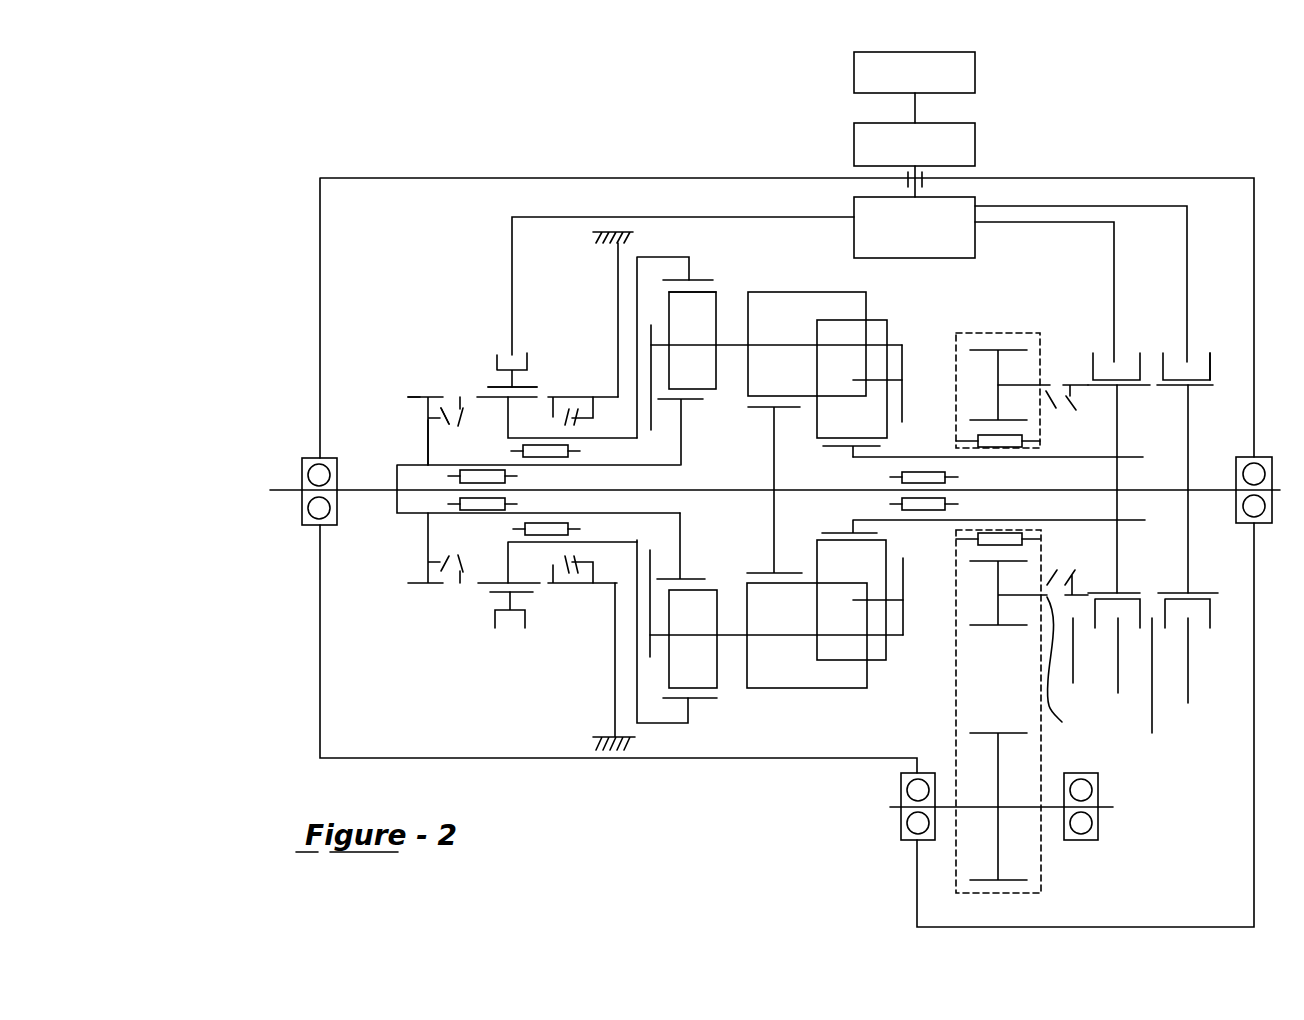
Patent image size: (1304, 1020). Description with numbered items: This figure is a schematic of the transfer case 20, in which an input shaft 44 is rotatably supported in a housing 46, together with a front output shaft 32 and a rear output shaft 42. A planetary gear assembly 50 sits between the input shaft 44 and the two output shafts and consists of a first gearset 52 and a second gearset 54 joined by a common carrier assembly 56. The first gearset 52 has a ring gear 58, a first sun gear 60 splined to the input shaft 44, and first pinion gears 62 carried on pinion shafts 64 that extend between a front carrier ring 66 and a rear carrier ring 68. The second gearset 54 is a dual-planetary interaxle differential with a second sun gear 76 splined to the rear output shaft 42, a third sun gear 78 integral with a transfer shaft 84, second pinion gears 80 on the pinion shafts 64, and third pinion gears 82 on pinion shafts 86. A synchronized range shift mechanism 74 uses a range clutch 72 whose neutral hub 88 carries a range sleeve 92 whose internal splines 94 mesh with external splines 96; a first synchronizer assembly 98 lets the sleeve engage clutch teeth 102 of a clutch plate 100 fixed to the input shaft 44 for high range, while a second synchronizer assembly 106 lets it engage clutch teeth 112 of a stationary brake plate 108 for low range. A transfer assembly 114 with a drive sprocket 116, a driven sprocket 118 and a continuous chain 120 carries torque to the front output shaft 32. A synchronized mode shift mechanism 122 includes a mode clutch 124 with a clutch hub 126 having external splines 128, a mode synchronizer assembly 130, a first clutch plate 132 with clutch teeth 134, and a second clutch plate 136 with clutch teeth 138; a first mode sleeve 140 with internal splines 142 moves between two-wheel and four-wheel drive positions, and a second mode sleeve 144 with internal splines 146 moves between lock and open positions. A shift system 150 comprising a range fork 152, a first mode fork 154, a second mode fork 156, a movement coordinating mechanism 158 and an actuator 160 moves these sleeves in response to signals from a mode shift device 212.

The transfer case 20 is at (292, 593).
The front output shaft 32 is at (892, 806).
The rear output shaft 42 is at (728, 488).
The input shaft 44 is at (270, 490).
The housing 46 is at (320, 378).
The planetary gear assembly 50 is at (806, 282).
The first gearset 52 is at (727, 282).
The second gearset 54 is at (886, 320).
The carrier assembly 56 is at (900, 342).
The ring gear 58 is at (690, 281).
The first sun gear 60 is at (681, 448).
The first pinion gears 62 is at (712, 315).
The pinion shaft 64 is at (735, 348).
The front carrier ring 66 is at (651, 430).
The rear carrier ring 68 is at (904, 366).
The range clutch 72 is at (428, 335).
The synchronized range shift mechanism 74 is at (500, 407).
The second sun gear 76 is at (775, 475).
The third sun gear 78 is at (853, 528).
The second pinion gears 80 is at (776, 305).
The third pinion gears 82 is at (823, 420).
The transfer shaft 84 is at (1100, 457).
The pinion shaft 86 is at (904, 388).
The neutral hub 88 is at (528, 432).
The range sleeve 92 is at (527, 357).
The internal splines 94 is at (500, 393).
The external splines 96 is at (537, 393).
The first synchronizer assembly 98 is at (452, 390).
The clutch plate 100 is at (428, 428).
The external clutch teeth 102 is at (416, 395).
The second synchronizer assembly 106 is at (573, 396).
The brake plate 108 is at (637, 312).
The clutch teeth 112 is at (593, 412).
The transfer assembly 114 is at (953, 678).
The drive sprocket 116 is at (978, 625).
The driven sprocket 118 is at (998, 780).
The continuous chain 120 is at (955, 722).
The synchronized mode shift mechanism 122 is at (1080, 567).
The mode clutch 124 is at (1190, 758).
The clutch hub 126 is at (1120, 418).
The external splines 128 is at (1088, 385).
The mode synchronizer assembly 130 is at (1050, 380).
The first clutch plate 132 is at (1018, 385).
The external clutch teeth 134 is at (1067, 675).
The second clutch plate 136 is at (1190, 420).
The clutch teeth 138 is at (1213, 386).
The first mode sleeve 140 is at (1093, 352).
The internal splines 142 is at (1140, 595).
The second mode sleeve 144 is at (1210, 356).
The internal splines 146 is at (1213, 593).
The shift system 150 is at (1078, 123).
The range fork 152 is at (512, 272).
The first mode fork 154 is at (1114, 284).
The second mode fork 156 is at (1187, 290).
The movement coordinating mechanism 158 is at (975, 258).
The actuator 160 is at (975, 145).
The mode shift device 212 is at (975, 73).